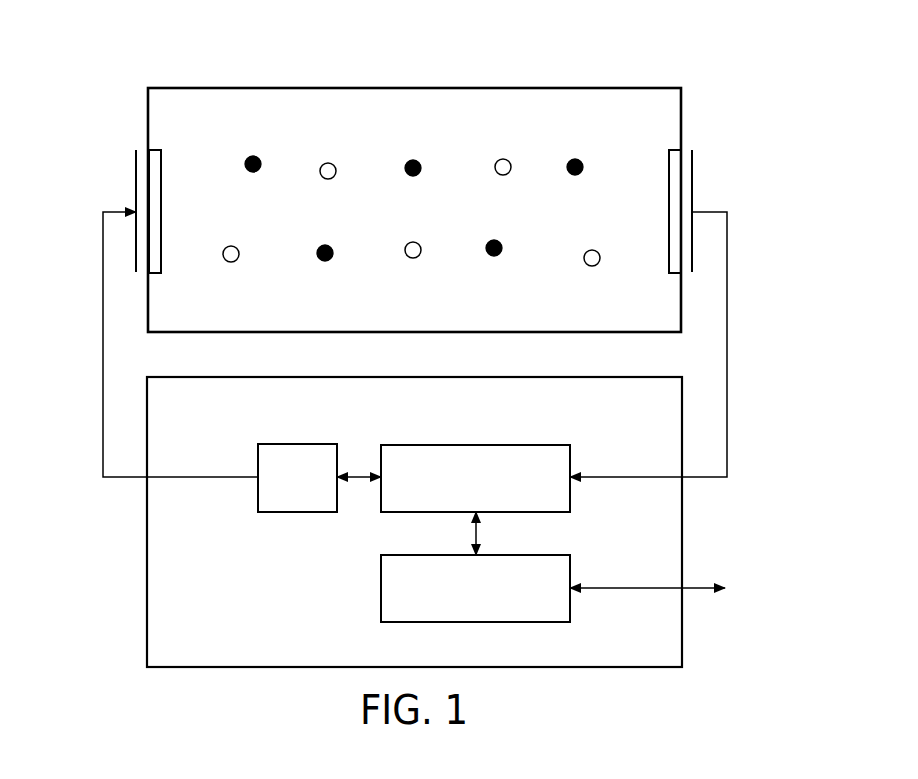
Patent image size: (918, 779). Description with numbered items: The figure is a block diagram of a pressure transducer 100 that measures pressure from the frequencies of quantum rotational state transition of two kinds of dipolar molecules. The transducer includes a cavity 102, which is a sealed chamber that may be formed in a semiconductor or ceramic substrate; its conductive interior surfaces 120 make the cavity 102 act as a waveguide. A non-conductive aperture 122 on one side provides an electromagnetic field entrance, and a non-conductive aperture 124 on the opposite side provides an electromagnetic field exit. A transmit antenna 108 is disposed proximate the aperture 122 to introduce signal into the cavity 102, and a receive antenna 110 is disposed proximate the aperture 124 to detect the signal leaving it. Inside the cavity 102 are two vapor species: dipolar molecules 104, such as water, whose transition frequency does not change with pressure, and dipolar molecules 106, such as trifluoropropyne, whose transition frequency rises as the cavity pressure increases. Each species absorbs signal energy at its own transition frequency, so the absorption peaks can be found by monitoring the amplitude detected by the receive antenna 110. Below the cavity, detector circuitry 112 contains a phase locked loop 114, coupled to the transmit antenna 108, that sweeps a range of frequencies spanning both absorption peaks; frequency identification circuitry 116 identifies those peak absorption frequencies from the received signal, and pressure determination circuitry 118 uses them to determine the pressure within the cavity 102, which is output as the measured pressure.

The pressure transducer 100 is at (330, 65).
The cavity 102 is at (538, 162).
The dipolar molecules 104 is at (327, 180).
The dipolar molecules 106 is at (252, 173).
The transmit antenna 108 is at (135, 173).
The receive antenna 110 is at (694, 172).
The detector circuitry 112 is at (145, 578).
The phase locked loop (PLL) 114 is at (299, 444).
The frequency identification circuitry 116 is at (487, 445).
The pressure determination circuitry 118 is at (572, 603).
The conductive interior surfaces 120 is at (300, 88).
The non-conductive aperture 122 is at (163, 185).
The non-conductive aperture 124 is at (667, 182).